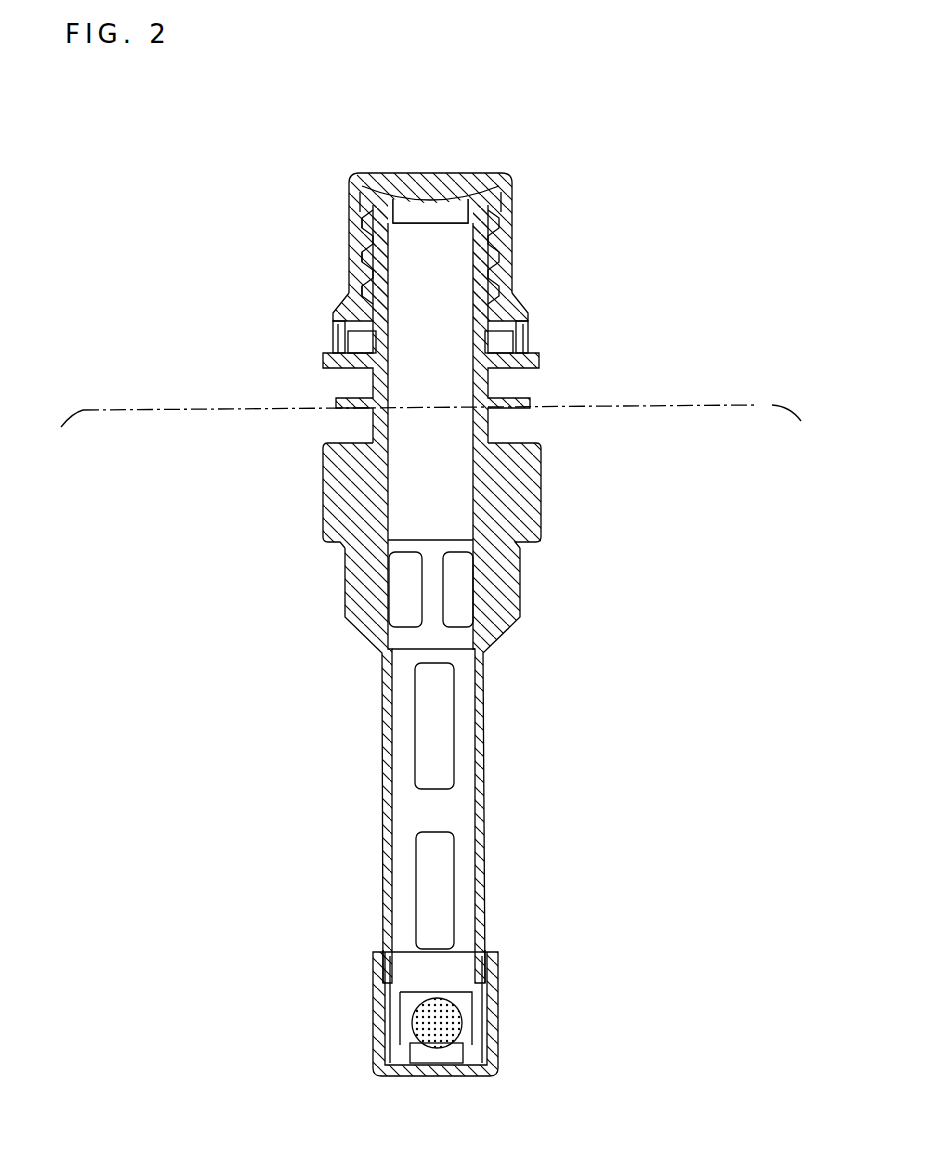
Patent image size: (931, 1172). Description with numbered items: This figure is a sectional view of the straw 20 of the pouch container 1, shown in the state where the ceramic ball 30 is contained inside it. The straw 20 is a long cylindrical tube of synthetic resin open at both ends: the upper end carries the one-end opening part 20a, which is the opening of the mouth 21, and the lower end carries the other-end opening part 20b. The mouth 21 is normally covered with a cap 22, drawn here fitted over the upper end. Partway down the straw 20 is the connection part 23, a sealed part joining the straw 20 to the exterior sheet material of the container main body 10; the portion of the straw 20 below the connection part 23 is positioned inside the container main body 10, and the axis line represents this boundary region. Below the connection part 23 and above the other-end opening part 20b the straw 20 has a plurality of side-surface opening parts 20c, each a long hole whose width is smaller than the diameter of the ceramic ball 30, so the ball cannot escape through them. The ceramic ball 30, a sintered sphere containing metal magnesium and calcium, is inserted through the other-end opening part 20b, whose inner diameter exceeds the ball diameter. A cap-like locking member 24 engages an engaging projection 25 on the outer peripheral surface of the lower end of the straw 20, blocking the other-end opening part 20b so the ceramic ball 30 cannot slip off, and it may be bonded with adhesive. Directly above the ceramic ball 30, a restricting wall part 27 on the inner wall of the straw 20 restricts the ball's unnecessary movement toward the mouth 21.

The pouch container 1 is at (646, 231).
The container main body 10 is at (753, 405).
The straw 20 is at (431, 605).
The one-end opening part 20a is at (425, 237).
The other-end opening part 20b is at (407, 1036).
The side-surface opening parts 20c is at (458, 596).
The mouth 21 is at (368, 257).
The cap 22 is at (493, 188).
The connection part 23 is at (526, 469).
The locking member 24 is at (492, 1013).
The engaging projection 25 is at (382, 972).
The restricting wall part 27 is at (463, 982).
The ceramic ball 30 is at (433, 1042).